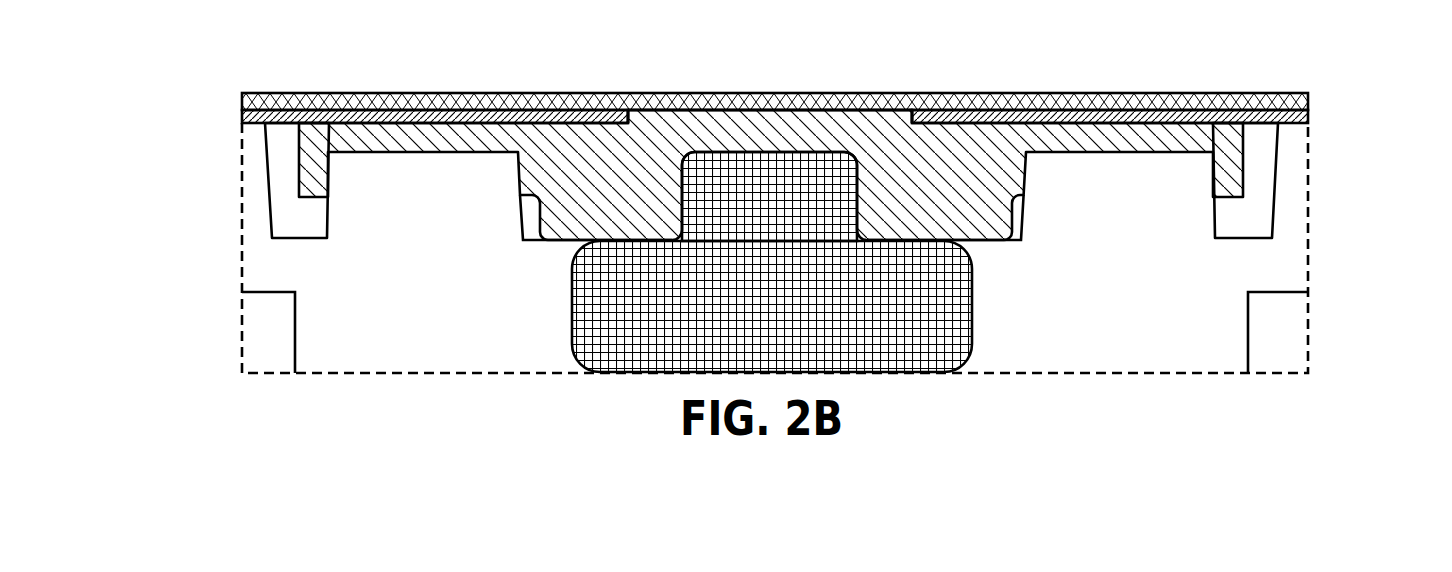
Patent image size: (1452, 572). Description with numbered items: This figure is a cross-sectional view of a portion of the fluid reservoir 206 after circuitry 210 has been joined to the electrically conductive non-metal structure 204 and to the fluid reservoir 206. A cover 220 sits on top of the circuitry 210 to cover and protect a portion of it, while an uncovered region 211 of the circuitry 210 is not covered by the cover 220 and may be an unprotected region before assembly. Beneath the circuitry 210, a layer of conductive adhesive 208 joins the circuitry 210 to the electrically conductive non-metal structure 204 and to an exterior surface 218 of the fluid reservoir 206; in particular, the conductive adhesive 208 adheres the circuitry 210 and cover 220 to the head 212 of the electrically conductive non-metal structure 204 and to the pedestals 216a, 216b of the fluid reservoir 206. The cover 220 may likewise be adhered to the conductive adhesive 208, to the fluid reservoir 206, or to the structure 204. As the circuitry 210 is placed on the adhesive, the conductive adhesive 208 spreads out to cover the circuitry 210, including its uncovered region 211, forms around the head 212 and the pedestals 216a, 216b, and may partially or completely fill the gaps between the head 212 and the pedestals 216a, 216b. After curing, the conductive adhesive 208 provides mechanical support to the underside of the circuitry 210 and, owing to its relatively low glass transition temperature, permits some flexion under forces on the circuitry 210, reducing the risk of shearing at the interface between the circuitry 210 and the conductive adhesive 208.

The electrically conductive non-metal structure 204 is at (572, 310).
The fluid reservoir 206 is at (310, 268).
The conductive adhesive 208 is at (653, 165).
The circuitry 210 is at (456, 93).
The uncovered region 211 is at (770, 110).
The head 212 is at (812, 151).
The pedestal 216a is at (327, 218).
The pedestal 216b is at (1215, 217).
The exterior surface 218 is at (977, 240).
The cover 220 is at (248, 118).